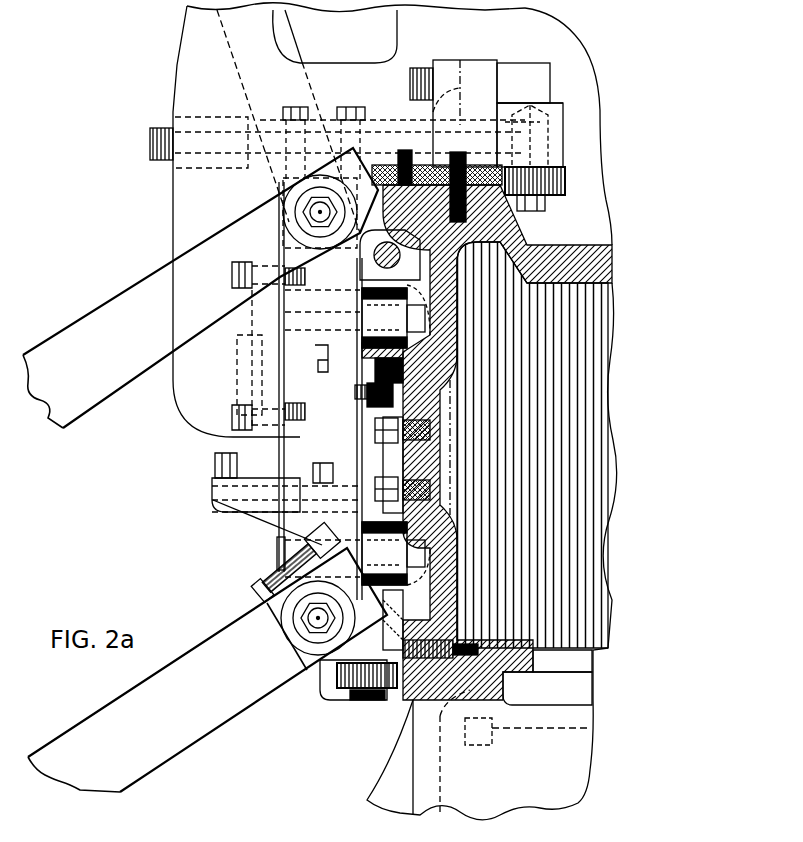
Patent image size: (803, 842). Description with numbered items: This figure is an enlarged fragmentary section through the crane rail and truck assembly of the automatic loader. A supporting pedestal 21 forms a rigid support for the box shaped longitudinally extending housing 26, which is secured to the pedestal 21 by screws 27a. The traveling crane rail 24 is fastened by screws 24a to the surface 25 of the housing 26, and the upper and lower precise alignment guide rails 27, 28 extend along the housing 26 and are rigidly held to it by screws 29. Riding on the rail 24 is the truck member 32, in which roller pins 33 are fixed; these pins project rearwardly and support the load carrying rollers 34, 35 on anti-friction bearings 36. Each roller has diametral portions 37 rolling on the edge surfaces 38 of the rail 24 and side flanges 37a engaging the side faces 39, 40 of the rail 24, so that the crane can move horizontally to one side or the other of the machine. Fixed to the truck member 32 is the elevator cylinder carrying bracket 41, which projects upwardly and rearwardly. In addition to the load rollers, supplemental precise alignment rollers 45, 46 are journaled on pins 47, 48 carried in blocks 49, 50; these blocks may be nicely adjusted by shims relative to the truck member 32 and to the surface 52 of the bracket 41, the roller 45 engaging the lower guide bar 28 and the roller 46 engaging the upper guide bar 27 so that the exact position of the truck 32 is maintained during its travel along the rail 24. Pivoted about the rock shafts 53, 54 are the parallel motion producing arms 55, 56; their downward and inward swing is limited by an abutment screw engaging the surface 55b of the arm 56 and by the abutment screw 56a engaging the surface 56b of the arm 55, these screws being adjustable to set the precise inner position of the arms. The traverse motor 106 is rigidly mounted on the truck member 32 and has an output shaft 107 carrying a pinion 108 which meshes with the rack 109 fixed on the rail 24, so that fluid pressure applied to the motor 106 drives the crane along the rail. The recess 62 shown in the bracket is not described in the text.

The supporting pedestal 21 is at (580, 768).
The traveling crane rail 24 is at (433, 462).
The screws 24a is at (380, 498).
The surface 25 is at (444, 400).
The box shaped longitudinally extending housing 26 is at (598, 305).
The upper precise alignment guide rail 27 is at (470, 166).
The screws 27a is at (492, 746).
The lower precise alignment guide rail 28 is at (452, 625).
The screws 29 is at (441, 668).
The truck member 32 is at (284, 462).
The roller pins 33 is at (327, 312).
The load carrying roller 34 is at (362, 348).
The load carrying roller 35 is at (348, 528).
The anti-friction bearings 36 is at (408, 300).
The diametral portions 37 is at (396, 440).
The side flanges 37a is at (432, 362).
The edge surfaces 38 is at (393, 436).
The side face 39 is at (372, 372).
The side face 40 is at (415, 362).
The elevator cylinder carrying bracket 41 is at (184, 72).
The supplemental precise alignment roller 45 is at (398, 703).
The supplemental precise alignment roller 46 is at (550, 192).
The pin 47 is at (368, 703).
The pin 48 is at (540, 158).
The block 49 is at (332, 702).
The block 50 is at (517, 65).
The surface 52 is at (502, 122).
The rock shaft 53 is at (300, 212).
The rock shaft 54 is at (300, 632).
The parallel motion producing arm 55 is at (200, 288).
The surface 55b is at (215, 636).
The parallel motion producing arm 56 is at (207, 670).
The abutment screw 56a is at (300, 532).
The surface 56b is at (108, 407).
The recess 62 is at (296, 50).
The traverse motor 106 is at (234, 362).
The output shaft 107 is at (352, 425).
The pinion 108 is at (433, 422).
The rack 109 is at (342, 385).